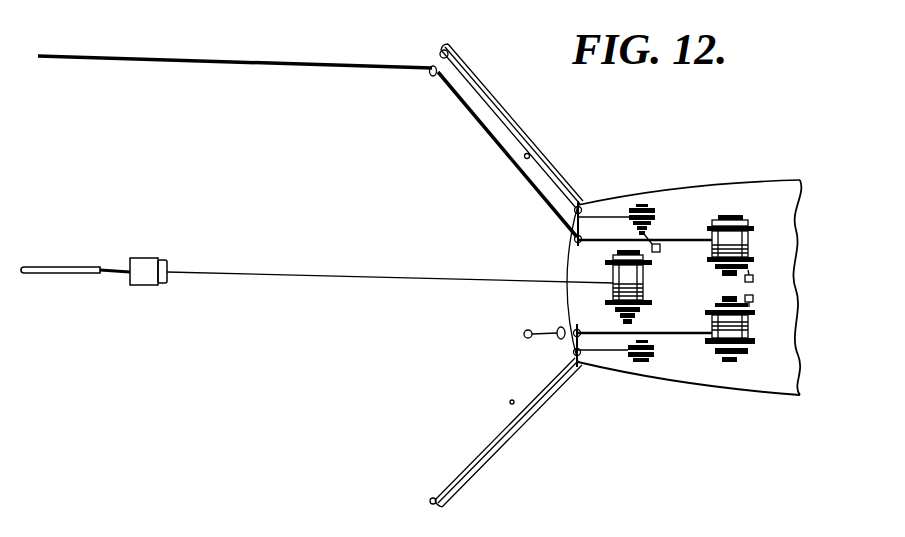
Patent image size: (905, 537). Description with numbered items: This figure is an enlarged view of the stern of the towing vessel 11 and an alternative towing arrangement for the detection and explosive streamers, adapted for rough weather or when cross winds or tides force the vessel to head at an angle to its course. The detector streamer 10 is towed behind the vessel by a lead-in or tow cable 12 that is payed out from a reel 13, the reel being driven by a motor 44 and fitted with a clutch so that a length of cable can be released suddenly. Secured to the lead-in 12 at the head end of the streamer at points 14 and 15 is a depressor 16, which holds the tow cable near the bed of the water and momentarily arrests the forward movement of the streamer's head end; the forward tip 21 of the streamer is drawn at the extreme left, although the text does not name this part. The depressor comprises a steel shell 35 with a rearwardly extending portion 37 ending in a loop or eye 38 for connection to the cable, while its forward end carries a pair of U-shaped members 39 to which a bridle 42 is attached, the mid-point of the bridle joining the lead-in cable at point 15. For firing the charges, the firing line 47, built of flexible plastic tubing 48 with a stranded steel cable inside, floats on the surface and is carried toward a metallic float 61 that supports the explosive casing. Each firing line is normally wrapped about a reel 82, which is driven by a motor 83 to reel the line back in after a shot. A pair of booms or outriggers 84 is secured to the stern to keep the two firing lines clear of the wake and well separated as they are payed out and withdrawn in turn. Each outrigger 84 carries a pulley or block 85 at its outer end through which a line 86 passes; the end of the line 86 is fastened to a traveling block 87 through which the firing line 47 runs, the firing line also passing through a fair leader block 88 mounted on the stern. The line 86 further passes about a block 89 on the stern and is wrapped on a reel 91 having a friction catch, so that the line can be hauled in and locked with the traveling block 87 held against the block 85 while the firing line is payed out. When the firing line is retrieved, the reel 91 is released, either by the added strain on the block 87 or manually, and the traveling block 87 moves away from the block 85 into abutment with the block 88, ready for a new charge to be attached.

The detector streamer 10 is at (71, 262).
The vessel 11 is at (650, 385).
The lead-in or tow cable 12 is at (246, 271).
The reel 13 is at (652, 281).
The point of connection 14 is at (108, 276).
The point of connection 15 is at (170, 272).
The depressor 16 is at (150, 259).
The tip 21 is at (38, 277).
The steel shell 35 is at (140, 286).
The rearwardly extending portion 37 is at (116, 266).
The loop or eye 38 is at (110, 268).
The U-shaped members 39 is at (168, 262).
The bridle 42 is at (157, 286).
The motor 44 is at (661, 250).
The firing line 47 is at (247, 52).
The tubing 48 is at (484, 132).
The metallic float 61 is at (526, 338).
The reel 82 is at (748, 238).
The motor 83 is at (762, 283).
The booms or outriggers 84 is at (524, 142).
The pulley or block 85 is at (440, 53).
The line 86 is at (530, 156).
The traveling block 87 is at (430, 74).
The fair leader block 88 is at (573, 239).
The block 89 is at (584, 206).
The reel 91 is at (652, 214).